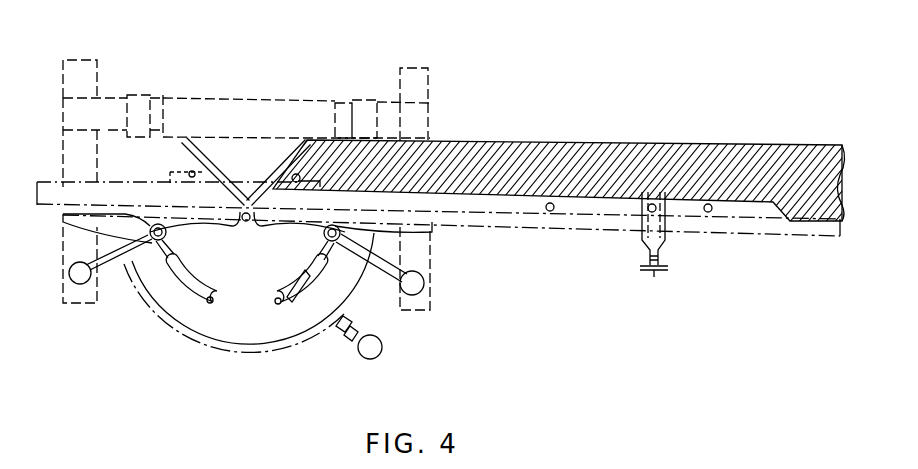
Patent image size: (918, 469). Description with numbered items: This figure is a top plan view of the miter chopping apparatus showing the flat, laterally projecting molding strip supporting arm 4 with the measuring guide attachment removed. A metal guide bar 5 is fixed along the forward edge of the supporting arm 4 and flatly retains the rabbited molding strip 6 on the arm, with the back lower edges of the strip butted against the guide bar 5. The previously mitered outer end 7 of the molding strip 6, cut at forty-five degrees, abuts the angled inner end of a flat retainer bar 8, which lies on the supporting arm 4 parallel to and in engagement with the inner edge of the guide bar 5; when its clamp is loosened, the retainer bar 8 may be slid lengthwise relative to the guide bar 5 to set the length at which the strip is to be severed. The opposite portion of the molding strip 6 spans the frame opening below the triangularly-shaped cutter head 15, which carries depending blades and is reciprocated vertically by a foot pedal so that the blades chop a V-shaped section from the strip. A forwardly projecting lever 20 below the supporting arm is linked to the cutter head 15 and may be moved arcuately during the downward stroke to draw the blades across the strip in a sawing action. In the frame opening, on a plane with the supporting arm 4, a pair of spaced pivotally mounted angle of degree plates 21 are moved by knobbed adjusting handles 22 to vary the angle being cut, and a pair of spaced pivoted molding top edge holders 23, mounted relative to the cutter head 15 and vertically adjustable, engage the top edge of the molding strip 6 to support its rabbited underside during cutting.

The molding strip supporting arm 4 is at (838, 168).
The guide bar 5 is at (558, 228).
The molding strip 6 is at (473, 203).
The mitered outer end 7 is at (548, 172).
The retainer bar 8 is at (742, 210).
The cutter head 15 is at (247, 165).
The lever 20 is at (380, 360).
The angle of degree plates 21 is at (145, 220).
The knobbed adjusting handles 22 is at (75, 280).
The molding top edge holders 23 is at (200, 165).